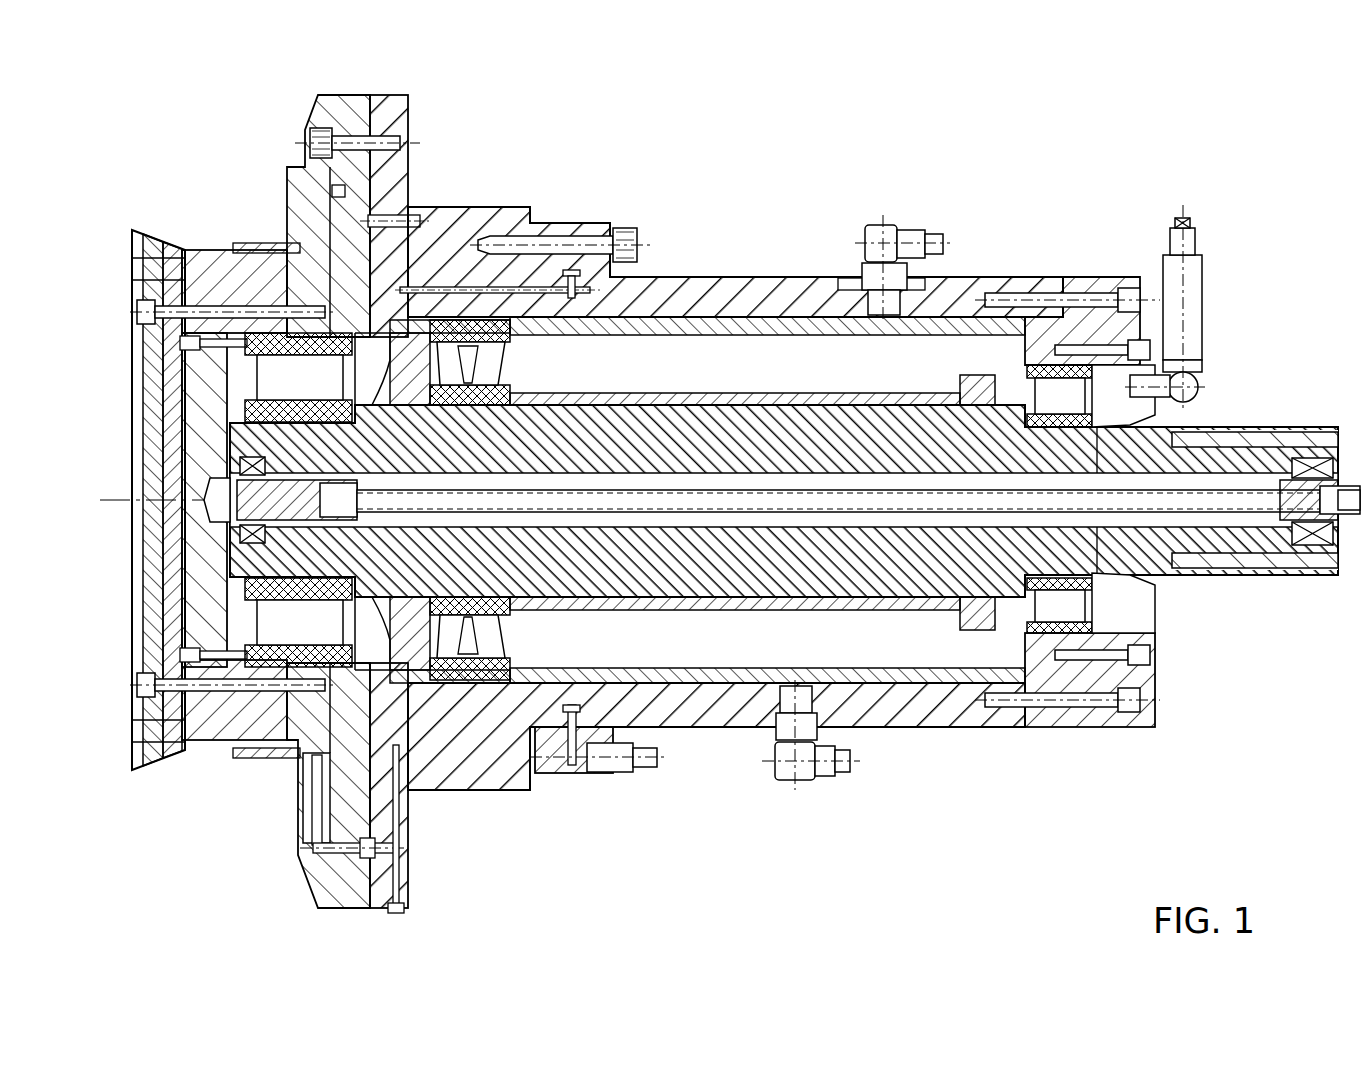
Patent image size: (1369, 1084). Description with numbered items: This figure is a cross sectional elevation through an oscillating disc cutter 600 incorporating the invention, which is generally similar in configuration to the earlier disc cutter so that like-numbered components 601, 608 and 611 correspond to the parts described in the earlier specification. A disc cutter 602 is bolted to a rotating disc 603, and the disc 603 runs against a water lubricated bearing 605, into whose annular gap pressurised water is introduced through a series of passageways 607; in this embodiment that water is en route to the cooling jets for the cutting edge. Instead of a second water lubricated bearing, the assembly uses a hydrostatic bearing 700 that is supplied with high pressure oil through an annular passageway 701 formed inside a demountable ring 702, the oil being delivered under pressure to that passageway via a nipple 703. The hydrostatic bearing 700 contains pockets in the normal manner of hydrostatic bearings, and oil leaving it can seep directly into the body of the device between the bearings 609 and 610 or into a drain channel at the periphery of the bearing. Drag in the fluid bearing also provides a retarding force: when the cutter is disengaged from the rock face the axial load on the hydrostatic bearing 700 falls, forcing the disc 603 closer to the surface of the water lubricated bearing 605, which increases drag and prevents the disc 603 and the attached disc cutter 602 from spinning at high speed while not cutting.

The spindle assembly 600 is at (695, 490).
The housing 601 is at (428, 778).
The disc cutter 602 is at (134, 758).
The disc 603 is at (283, 232).
The bearing 605 is at (298, 188).
The passageways 607 is at (498, 755).
The clamp piece 608 is at (340, 828).
The bearing 609 is at (298, 500).
The bearing 610 is at (490, 343).
The end bearing 611 is at (1065, 400).
The hydrostatic bearing 700 is at (392, 278).
The annular passageway 701 is at (545, 268).
The demountable ring 702 is at (600, 228).
The nipple 703 is at (663, 758).